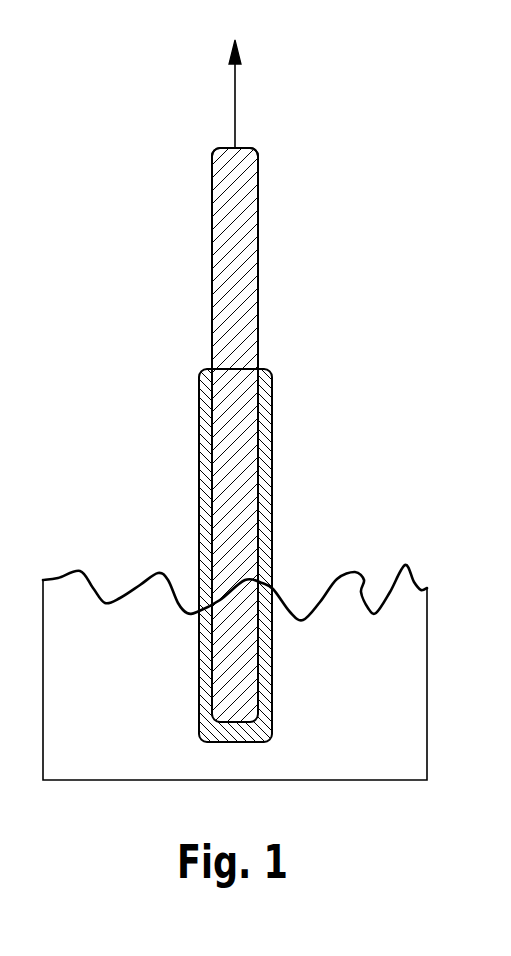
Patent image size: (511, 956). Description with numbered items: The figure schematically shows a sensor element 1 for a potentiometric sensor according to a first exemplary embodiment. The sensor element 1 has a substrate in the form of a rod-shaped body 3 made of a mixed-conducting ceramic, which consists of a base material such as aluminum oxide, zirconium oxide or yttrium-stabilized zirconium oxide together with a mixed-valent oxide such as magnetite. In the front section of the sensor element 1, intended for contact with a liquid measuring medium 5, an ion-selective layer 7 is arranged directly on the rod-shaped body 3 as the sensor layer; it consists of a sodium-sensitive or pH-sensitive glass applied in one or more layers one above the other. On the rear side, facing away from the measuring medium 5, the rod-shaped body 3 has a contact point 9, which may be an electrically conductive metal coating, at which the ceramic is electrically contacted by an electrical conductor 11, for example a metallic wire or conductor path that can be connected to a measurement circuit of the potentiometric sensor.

The sensor element 1 is at (380, 275).
The rod-shaped body 3 is at (256, 226).
The liquid measuring medium 5 is at (345, 575).
The ion-selective layer 7 is at (273, 447).
The contact point 9 is at (240, 148).
The electrical conductor 11 is at (235, 90).